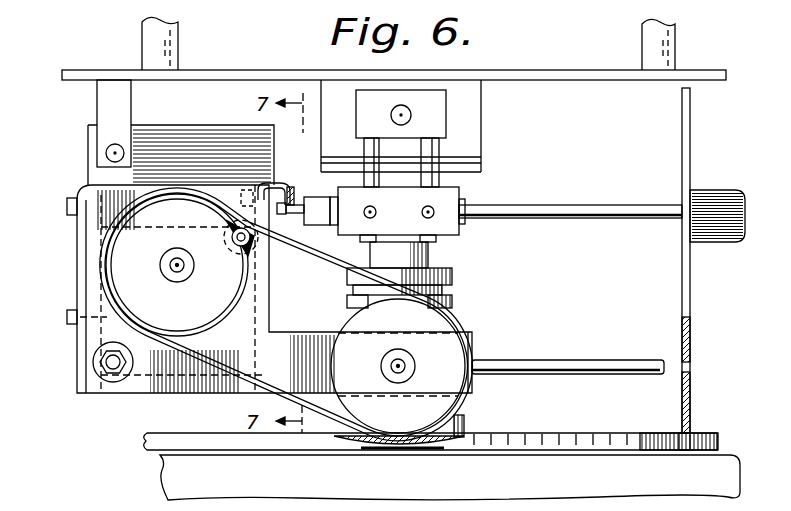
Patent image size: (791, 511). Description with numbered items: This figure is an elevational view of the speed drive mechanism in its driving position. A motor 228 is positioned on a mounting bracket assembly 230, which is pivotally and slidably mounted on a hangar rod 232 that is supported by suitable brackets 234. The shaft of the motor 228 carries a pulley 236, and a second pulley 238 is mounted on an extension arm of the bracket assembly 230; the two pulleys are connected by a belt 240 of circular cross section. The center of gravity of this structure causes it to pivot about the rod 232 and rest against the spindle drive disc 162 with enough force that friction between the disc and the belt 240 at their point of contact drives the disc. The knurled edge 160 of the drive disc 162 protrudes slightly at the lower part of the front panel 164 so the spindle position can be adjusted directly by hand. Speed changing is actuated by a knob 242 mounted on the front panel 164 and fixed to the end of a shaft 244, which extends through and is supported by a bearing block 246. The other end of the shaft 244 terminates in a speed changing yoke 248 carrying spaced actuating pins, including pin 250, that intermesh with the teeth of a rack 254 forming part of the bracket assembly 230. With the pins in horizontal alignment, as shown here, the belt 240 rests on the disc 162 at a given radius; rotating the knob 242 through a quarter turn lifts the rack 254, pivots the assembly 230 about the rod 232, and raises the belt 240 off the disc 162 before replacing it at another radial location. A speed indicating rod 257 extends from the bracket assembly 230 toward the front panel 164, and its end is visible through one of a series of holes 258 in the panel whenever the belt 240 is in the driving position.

The knurled edge 160 is at (720, 438).
The spindle drive disc 162 is at (545, 432).
The front panel 164 is at (690, 277).
The motor 228 is at (110, 296).
The mounting bracket assembly 230 is at (80, 231).
The hangar rod 232 is at (106, 149).
The brackets 234 is at (114, 97).
The pulley 236 is at (125, 243).
The second pulley 238 is at (436, 329).
The belt 240 is at (286, 380).
The knob 242 is at (722, 190).
The shaft 244 is at (583, 209).
The bearing block 246 is at (452, 195).
The speed changing yoke 248 is at (316, 186).
The actuating pin 250 is at (290, 208).
The rack 254 is at (272, 182).
The speed indicating rod 257 is at (586, 359).
The holes 258 is at (690, 368).